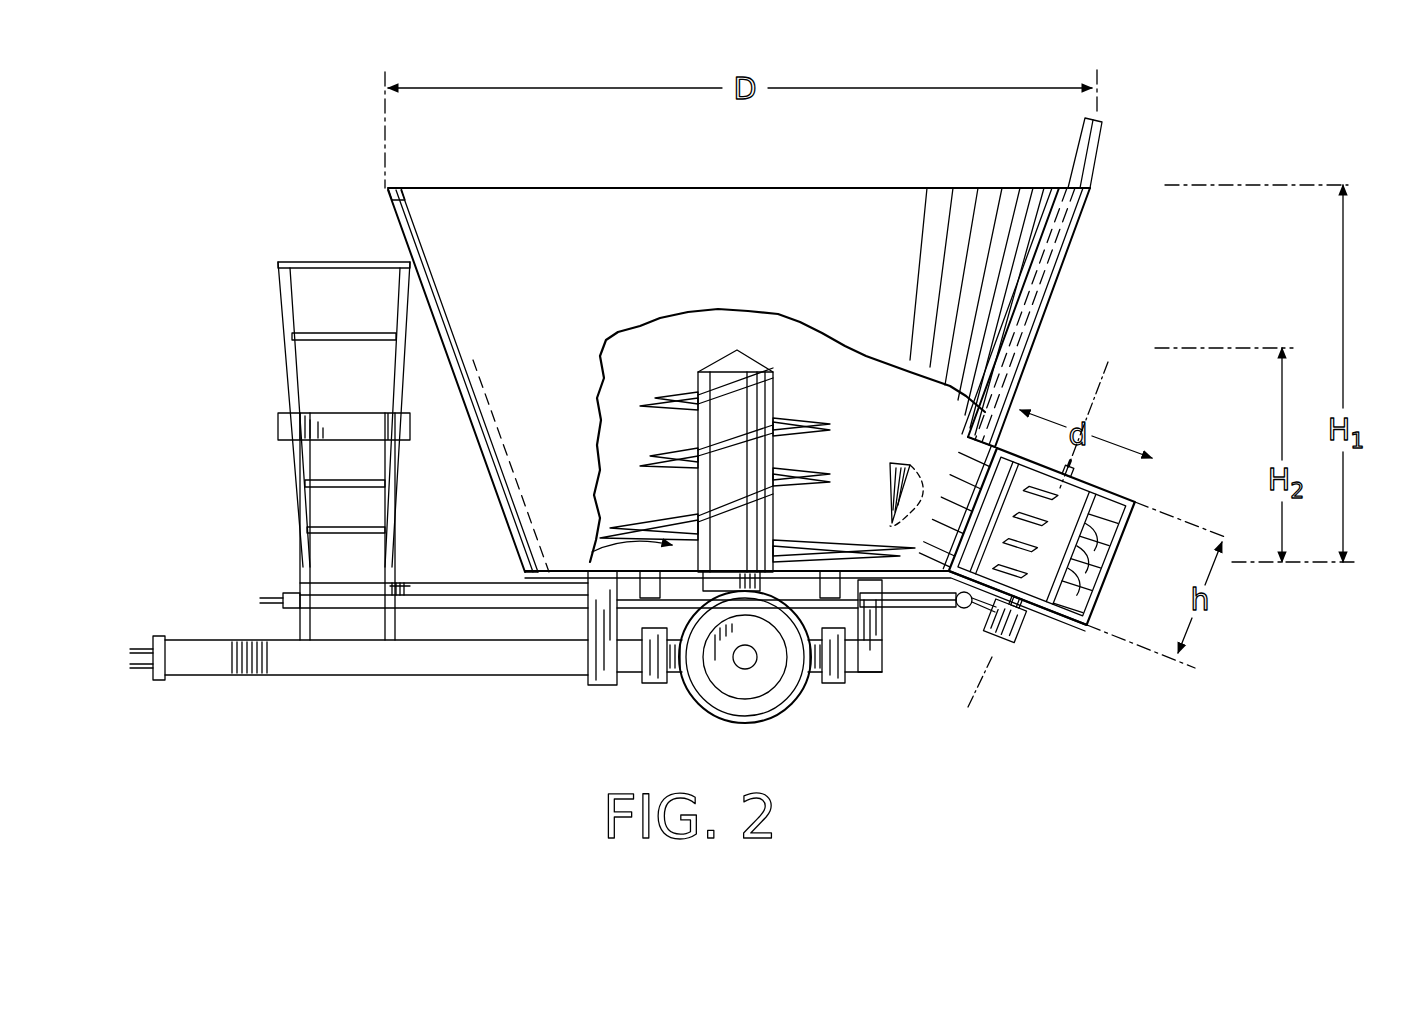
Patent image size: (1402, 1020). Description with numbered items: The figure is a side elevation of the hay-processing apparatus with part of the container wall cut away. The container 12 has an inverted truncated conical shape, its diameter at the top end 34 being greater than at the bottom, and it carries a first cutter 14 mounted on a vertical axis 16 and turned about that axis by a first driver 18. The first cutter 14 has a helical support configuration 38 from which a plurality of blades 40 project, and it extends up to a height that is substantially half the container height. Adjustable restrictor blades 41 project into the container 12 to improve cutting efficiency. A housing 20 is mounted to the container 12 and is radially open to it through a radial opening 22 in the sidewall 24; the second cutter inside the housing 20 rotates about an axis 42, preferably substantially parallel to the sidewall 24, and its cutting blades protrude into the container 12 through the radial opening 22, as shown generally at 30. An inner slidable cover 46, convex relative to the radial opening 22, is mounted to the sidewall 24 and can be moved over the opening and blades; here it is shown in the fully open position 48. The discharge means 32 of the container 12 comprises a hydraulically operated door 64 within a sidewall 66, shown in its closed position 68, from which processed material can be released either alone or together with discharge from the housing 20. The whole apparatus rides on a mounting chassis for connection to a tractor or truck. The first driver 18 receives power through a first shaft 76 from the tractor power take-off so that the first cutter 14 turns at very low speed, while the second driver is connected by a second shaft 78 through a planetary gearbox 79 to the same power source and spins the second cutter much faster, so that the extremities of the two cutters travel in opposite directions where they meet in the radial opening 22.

The container 12 is at (735, 239).
The first cutter 14 is at (600, 565).
The vertical axis 16 is at (655, 400).
The first driver 18 is at (728, 580).
The housing 20 is at (1098, 655).
The radial opening 22 is at (957, 465).
The sidewall 24 is at (1072, 262).
The protrusion 30 is at (968, 510).
The discharge means 32 is at (490, 370).
The top end 34 is at (562, 187).
The helical support configuration 38 is at (660, 355).
The blades 40 is at (700, 380).
The adjustable restrictor blades 41 is at (925, 500).
The axis 42 is at (1108, 365).
The inner slidable cover 46 is at (1102, 135).
The fully open position 48 is at (950, 440).
The hydraulically operated door 64 is at (494, 466).
The sidewall 66 is at (395, 208).
The closed position 68 is at (520, 558).
The first shaft 76 is at (270, 597).
The second shaft 78 is at (922, 598).
The planetary gearbox 79 is at (998, 655).